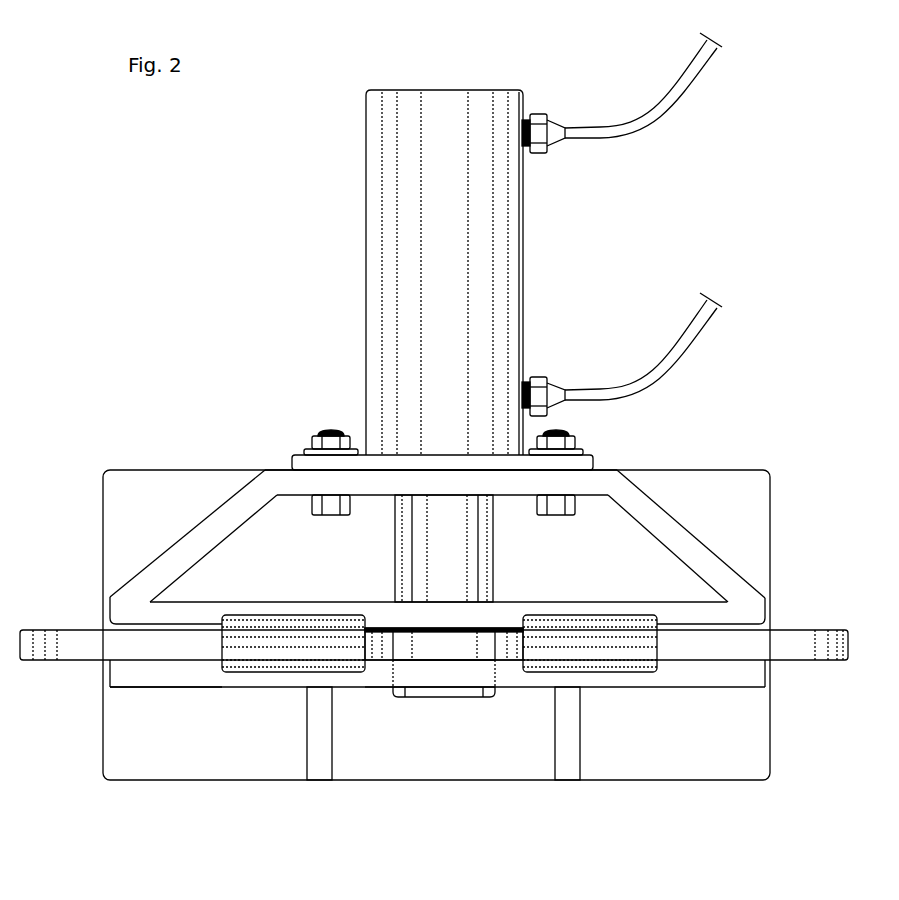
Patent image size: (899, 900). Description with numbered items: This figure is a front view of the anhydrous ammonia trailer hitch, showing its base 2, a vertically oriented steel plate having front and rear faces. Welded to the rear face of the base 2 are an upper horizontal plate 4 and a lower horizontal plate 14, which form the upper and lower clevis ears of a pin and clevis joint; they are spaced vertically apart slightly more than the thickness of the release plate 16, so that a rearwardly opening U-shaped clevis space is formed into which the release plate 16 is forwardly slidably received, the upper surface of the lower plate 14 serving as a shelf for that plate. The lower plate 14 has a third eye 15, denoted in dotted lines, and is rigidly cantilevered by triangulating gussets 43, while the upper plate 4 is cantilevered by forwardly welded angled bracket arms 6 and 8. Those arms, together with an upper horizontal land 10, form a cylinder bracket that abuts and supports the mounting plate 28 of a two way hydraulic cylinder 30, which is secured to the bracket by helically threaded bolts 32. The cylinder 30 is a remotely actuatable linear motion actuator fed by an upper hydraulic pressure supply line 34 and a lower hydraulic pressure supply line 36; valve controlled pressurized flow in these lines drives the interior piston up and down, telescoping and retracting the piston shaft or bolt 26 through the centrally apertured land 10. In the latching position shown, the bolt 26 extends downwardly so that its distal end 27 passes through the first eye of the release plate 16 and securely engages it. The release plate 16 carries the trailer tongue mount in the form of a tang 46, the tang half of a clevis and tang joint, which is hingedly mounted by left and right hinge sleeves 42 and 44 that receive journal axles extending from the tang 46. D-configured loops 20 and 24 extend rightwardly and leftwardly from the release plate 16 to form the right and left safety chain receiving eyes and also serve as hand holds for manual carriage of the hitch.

The base 2 is at (165, 483).
The upper horizontal plate 4 is at (682, 610).
The angled bracket arm 6 is at (230, 527).
The angled bracket arm 8 is at (648, 513).
The upper horizontal land 10 is at (553, 483).
The lower horizontal plate 14 is at (190, 677).
The third eye 15 is at (480, 703).
The release plate 16 is at (698, 661).
The loop 20 is at (825, 638).
The loop 24 is at (40, 652).
The bolt 26 is at (473, 538).
The distal end 27 is at (497, 673).
The mounting plate 28 is at (428, 465).
The two way hydraulic cylinder 30 is at (385, 163).
The helically threaded bolts 32 is at (328, 432).
The upper hydraulic pressure supply line 34 is at (592, 130).
The lower hydraulic pressure supply line 36 is at (573, 395).
The left hinge sleeve 42 is at (248, 656).
The triangulating gussets 43 is at (315, 737).
The right hinge sleeve 44 is at (603, 656).
The tang 46 is at (428, 650).